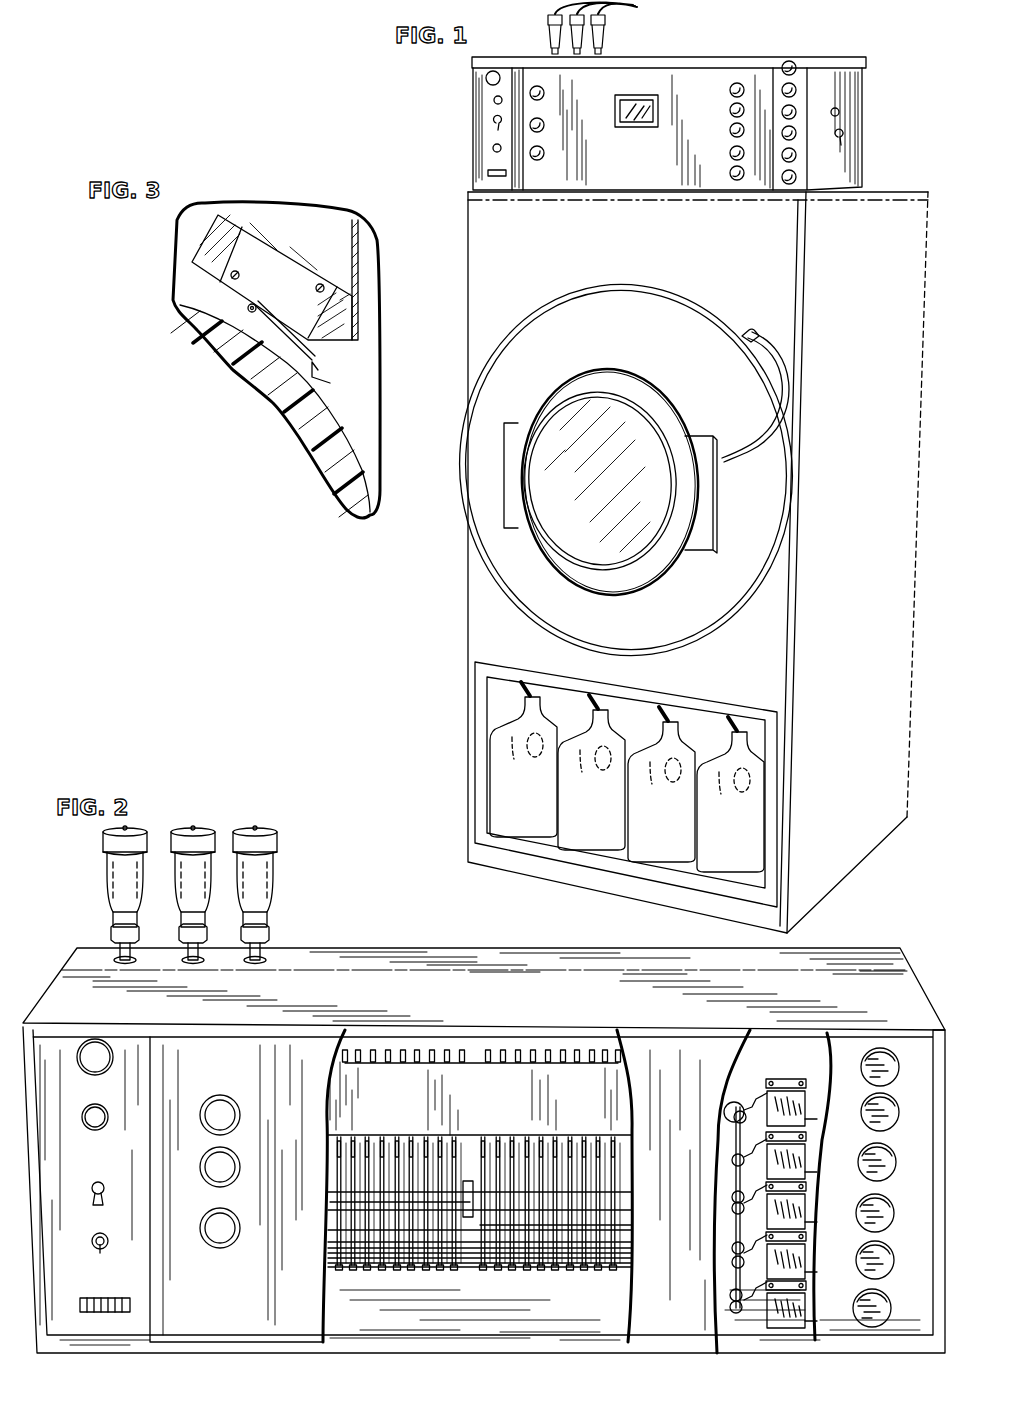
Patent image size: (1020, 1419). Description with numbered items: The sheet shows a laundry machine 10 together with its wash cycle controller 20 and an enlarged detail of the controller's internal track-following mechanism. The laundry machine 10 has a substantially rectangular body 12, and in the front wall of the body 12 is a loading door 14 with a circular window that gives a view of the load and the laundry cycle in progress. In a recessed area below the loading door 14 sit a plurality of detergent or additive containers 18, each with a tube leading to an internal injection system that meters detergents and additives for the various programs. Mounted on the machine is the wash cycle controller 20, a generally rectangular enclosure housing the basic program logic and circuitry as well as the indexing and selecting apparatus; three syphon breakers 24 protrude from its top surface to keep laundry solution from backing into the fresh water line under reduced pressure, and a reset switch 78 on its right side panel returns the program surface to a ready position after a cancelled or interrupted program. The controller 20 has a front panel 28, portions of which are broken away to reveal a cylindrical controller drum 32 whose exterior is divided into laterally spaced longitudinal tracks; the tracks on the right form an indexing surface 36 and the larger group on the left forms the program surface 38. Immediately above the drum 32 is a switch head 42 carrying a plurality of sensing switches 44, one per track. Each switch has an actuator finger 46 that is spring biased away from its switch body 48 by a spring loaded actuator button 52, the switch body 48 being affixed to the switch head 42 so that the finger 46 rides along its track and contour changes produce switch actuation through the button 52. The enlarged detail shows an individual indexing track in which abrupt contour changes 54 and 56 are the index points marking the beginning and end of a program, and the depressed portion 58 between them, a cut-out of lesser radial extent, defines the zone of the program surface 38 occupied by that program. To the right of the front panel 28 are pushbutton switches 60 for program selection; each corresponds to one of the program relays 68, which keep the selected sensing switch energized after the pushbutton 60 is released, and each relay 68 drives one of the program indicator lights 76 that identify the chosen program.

In FIG. 1, the laundry machine 10 is at (671, 467).
In FIG. 1, the body 12 is at (480, 253).
In FIG. 1, the loading door 14 is at (485, 508).
In FIG. 1, the detergent or additive containers 18 is at (727, 850).
In FIG. 1, the wash cycle controller 20 is at (660, 119).
In FIG. 1, the syphon breakers 24 is at (604, 28).
In FIG. 2, the syphon breakers 24 is at (250, 841).
In FIG. 1, the front panel 28 is at (696, 72).
In FIG. 2, the front panel 28 is at (225, 1313).
In FIG. 2, the cylindrical controller drum 32 is at (287, 1132).
In FIG. 2, the indexing surface 36 is at (590, 1274).
In FIG. 2, the program surface 38 is at (420, 1274).
In FIG. 3, the switch head 42 is at (354, 234).
In FIG. 2, the switch head 42 is at (500, 1189).
In FIG. 3, the sensing switches 44 is at (233, 213).
In FIG. 3, the actuator finger 46 is at (318, 362).
In FIG. 2, the actuator finger 46 is at (424, 1145).
In FIG. 3, the switch body 48 is at (272, 255).
In FIG. 3, the actuator button 52 is at (288, 323).
In FIG. 3, the index point 54 is at (271, 416).
In FIG. 2, the index point 54 is at (582, 1167).
In FIG. 3, the index point 56 is at (333, 467).
In FIG. 2, the index point 56 is at (582, 1205).
In FIG. 3, the depressed portion 58 is at (277, 403).
In FIG. 2, the depressed portion 58 is at (582, 1185).
In FIG. 1, the pushbutton switches 60 is at (794, 112).
In FIG. 2, the pushbutton switches 60 is at (913, 1125).
In FIG. 2, the program relays 68 is at (797, 1160).
In FIG. 2, the program indicator lights 76 is at (734, 1158).
In FIG. 1, the reset switch 78 is at (841, 137).